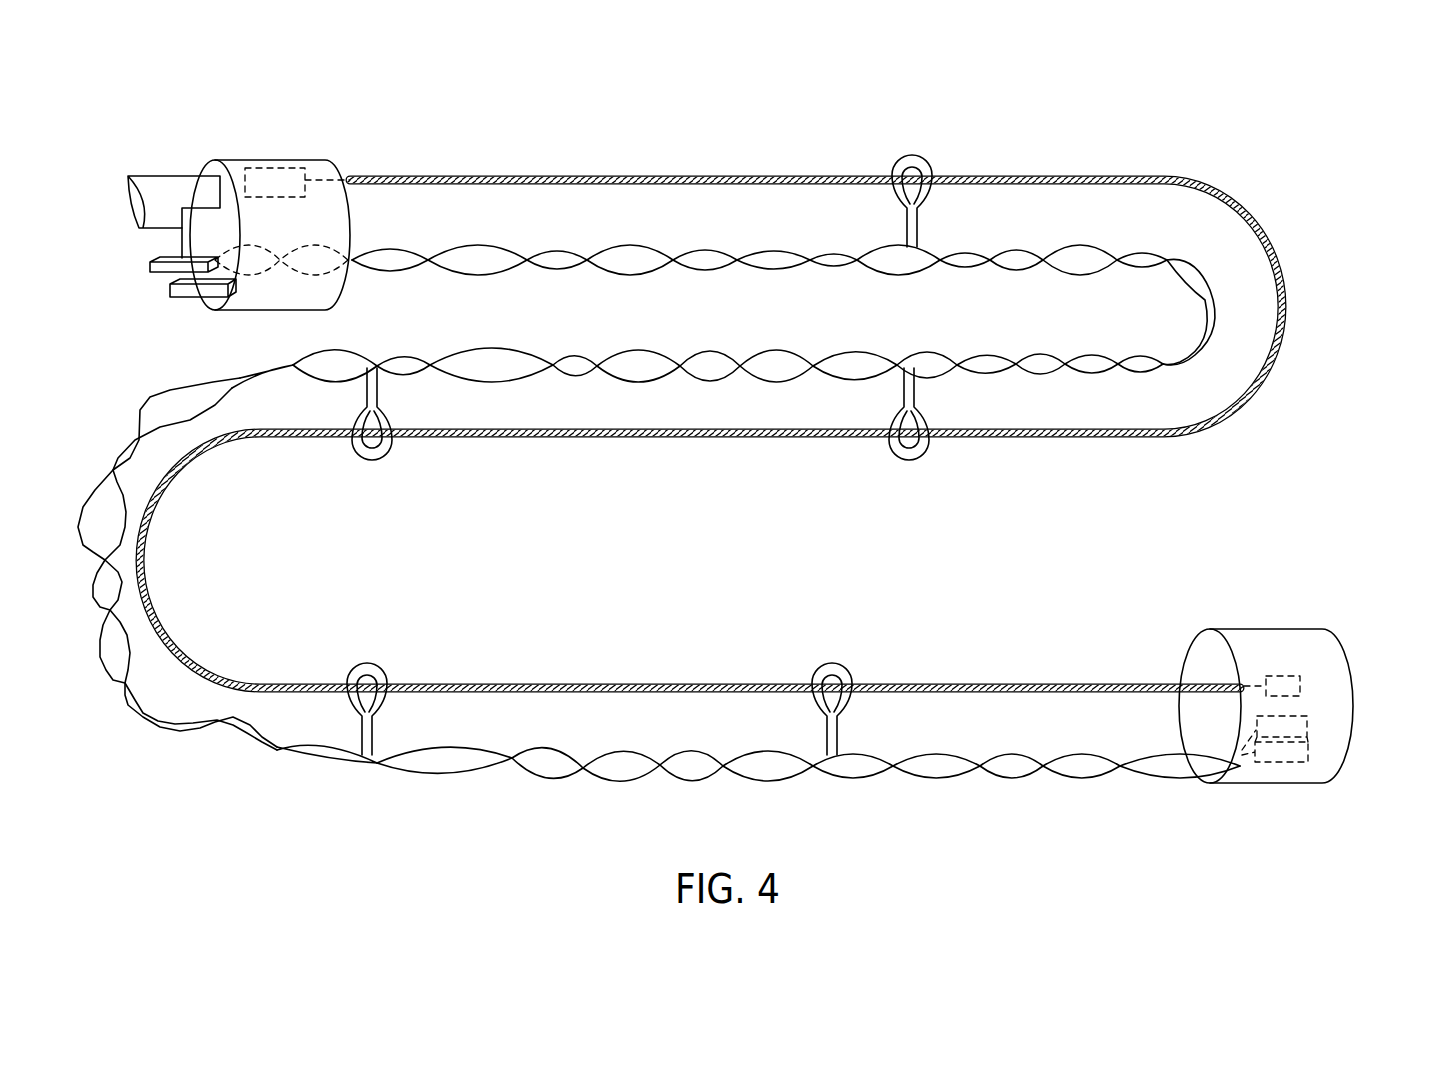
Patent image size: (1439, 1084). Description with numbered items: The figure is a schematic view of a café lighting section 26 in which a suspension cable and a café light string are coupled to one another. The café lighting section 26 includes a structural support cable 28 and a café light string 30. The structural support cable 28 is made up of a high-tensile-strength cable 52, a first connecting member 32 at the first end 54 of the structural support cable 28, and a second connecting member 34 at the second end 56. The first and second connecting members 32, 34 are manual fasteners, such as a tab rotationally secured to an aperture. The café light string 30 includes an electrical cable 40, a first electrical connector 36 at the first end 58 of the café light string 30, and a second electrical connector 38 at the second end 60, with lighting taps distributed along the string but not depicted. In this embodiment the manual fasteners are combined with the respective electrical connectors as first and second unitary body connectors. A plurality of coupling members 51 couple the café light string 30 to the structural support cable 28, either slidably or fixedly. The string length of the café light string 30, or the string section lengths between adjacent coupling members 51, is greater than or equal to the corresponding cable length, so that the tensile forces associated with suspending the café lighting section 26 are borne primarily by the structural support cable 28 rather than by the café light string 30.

The café lighting section 26 is at (711, 377).
The structural support cable 28 is at (1184, 142).
The café light string 30 is at (715, 313).
The first connecting member 32 is at (180, 183).
The second connecting member 34 is at (1284, 666).
The first electrical connector 36 is at (154, 279).
The second electrical connector 38 is at (1374, 770).
The electrical cable 40 is at (1040, 272).
The coupling members 51 is at (905, 152).
The high-tensile-strength cable 52 is at (711, 377).
The first end of structural support cable 54 is at (212, 226).
The second end of structural support cable 56 is at (1376, 648).
The first end of café light string 58 is at (228, 318).
The second end of café light string 60 is at (1305, 732).